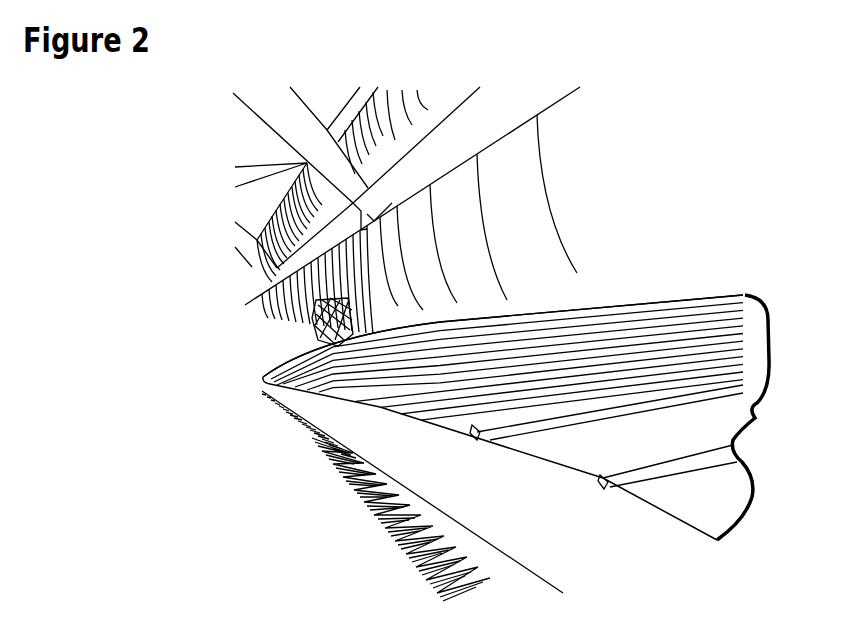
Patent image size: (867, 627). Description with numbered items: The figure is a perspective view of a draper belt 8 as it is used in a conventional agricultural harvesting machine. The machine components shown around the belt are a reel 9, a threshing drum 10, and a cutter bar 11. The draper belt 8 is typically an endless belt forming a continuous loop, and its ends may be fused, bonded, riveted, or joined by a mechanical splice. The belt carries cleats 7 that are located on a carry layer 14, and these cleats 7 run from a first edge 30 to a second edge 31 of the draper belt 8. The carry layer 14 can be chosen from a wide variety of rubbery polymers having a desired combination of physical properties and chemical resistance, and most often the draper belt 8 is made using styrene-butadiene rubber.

The cleats 7 is at (657, 402).
The draper belt 8 is at (758, 404).
The reel 9 is at (505, 118).
The threshing drum 10 is at (327, 333).
The cutter bar 11 is at (485, 557).
The carry layer 14 is at (668, 318).
The first edge 30 is at (380, 407).
The second edge 31 is at (518, 318).